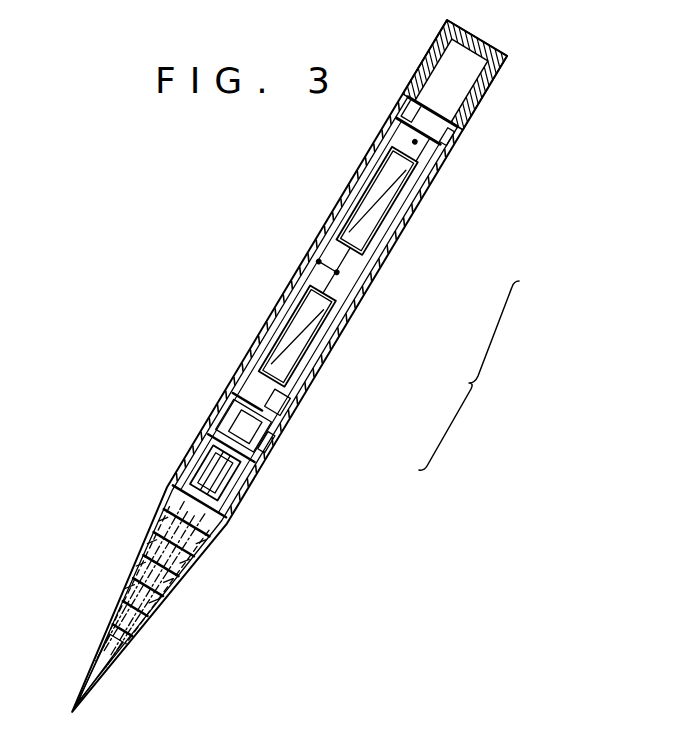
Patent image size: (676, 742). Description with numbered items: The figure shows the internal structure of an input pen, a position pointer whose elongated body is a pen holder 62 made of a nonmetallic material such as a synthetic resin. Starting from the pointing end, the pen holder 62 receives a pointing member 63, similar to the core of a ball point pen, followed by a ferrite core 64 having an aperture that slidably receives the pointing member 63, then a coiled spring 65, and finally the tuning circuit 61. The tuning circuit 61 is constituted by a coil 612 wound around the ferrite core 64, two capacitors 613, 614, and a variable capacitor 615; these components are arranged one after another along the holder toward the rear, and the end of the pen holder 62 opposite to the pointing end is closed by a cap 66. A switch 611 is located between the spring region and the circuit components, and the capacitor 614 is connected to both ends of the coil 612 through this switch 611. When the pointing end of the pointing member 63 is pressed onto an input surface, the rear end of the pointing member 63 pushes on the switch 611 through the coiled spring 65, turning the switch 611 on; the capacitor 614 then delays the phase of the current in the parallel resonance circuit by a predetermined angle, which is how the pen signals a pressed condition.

The tuning circuit 61 is at (492, 375).
The pen holder 62 is at (292, 290).
The pointing member 63 is at (90, 648).
The ferrite core 64 is at (150, 551).
The coiled spring 65 is at (193, 463).
The cap 66 is at (456, 29).
The switch 611 is at (274, 446).
The coil 612 is at (190, 583).
The capacitor 613 is at (398, 203).
The capacitor 614 is at (332, 312).
The variable capacitor 615 is at (448, 148).